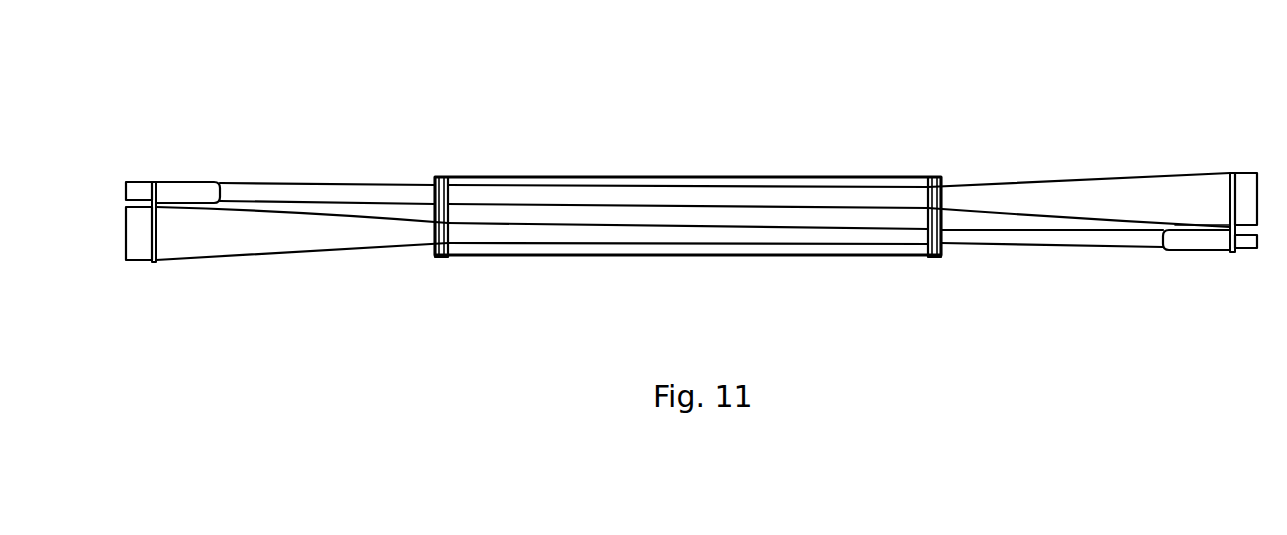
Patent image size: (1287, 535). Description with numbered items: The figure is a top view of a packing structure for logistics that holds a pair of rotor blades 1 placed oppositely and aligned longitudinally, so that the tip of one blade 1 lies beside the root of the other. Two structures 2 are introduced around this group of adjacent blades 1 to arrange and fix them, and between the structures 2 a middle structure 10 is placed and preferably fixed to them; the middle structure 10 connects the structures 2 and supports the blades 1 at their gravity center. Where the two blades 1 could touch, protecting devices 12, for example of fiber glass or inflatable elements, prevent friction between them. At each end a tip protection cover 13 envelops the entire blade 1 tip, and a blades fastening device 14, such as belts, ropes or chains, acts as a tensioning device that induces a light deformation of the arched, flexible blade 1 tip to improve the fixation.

The blade 1 is at (258, 237).
The structure 2 is at (440, 177).
The middle structure 10 is at (700, 177).
The protecting device 12 is at (219, 184).
The tip protection cover 13 is at (172, 187).
The blades fastening device 14 is at (156, 262).